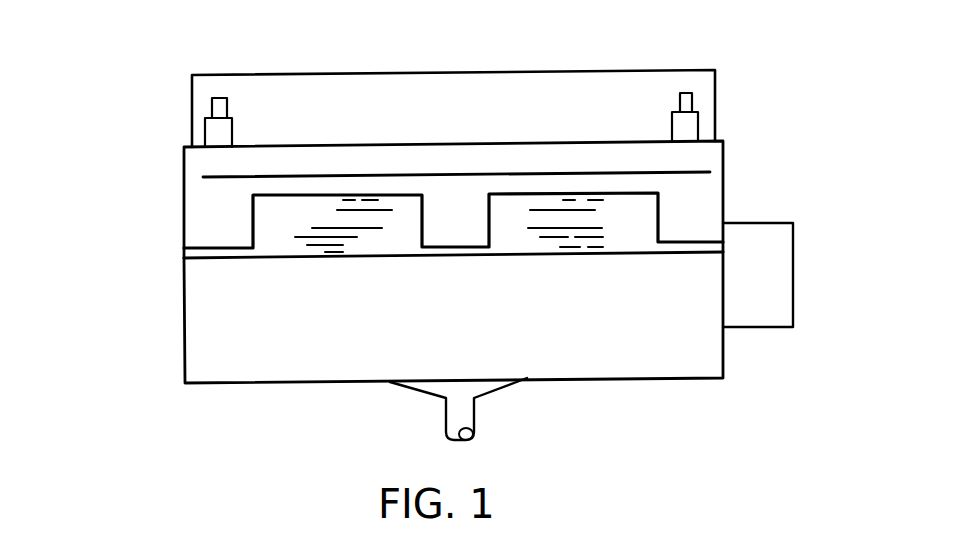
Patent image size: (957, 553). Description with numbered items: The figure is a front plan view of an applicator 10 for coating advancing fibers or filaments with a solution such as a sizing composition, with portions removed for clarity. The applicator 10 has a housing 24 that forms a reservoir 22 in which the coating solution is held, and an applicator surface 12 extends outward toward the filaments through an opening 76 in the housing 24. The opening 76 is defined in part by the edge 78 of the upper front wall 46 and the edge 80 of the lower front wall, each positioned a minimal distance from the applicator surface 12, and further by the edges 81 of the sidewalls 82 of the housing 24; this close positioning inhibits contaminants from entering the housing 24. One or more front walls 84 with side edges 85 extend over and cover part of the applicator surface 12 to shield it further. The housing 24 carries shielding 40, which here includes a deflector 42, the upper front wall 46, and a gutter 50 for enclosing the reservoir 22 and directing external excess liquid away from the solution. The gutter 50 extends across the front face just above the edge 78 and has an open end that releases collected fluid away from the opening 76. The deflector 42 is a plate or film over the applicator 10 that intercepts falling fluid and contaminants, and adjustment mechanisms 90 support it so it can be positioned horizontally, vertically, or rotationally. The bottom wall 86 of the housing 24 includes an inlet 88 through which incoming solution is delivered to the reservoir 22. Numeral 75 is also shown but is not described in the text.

The applicator 10 is at (110, 113).
The applicator surface 12 is at (612, 236).
The reservoir 22 is at (212, 385).
The housing 24 is at (160, 382).
The shielding 40 is at (792, 100).
The deflector 42 is at (192, 87).
The upper front wall 46 is at (196, 170).
The gutter 50 is at (700, 167).
The side port 75 is at (796, 285).
The opening 76 is at (272, 243).
The edge 78 is at (282, 200).
The edge 80 is at (403, 252).
The edges 81 is at (180, 233).
The sidewalls 82 is at (185, 302).
The front walls 84 is at (214, 222).
The side edges 85 is at (655, 213).
The bottom wall 86 is at (690, 380).
The inlet 88 is at (476, 418).
The adjustment mechanisms 90 is at (232, 128).